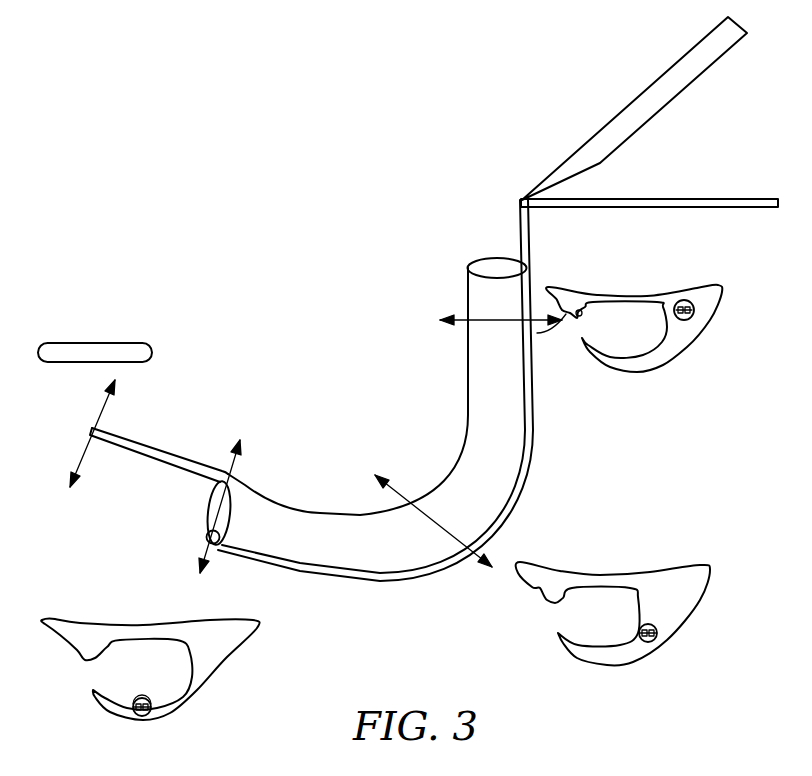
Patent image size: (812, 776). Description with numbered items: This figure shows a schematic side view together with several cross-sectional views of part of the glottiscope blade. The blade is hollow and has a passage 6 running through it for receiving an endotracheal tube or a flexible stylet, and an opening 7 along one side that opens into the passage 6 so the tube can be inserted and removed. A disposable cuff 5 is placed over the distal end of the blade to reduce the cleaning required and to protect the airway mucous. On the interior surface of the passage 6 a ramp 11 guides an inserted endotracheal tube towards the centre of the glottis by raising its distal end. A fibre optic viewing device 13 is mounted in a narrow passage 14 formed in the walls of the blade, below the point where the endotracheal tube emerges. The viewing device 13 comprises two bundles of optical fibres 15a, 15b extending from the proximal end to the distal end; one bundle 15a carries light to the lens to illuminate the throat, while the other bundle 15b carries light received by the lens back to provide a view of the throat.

The disposable cuff 5 is at (162, 480).
The passage 6 is at (595, 615).
The opening 7 is at (103, 673).
The ramp 11 is at (145, 692).
The fibre optic viewing device 13 is at (523, 457).
The narrow passage 14 is at (688, 300).
The bundle of optical fibres 15a is at (209, 546).
The bundle of optical fibres 15b is at (207, 536).